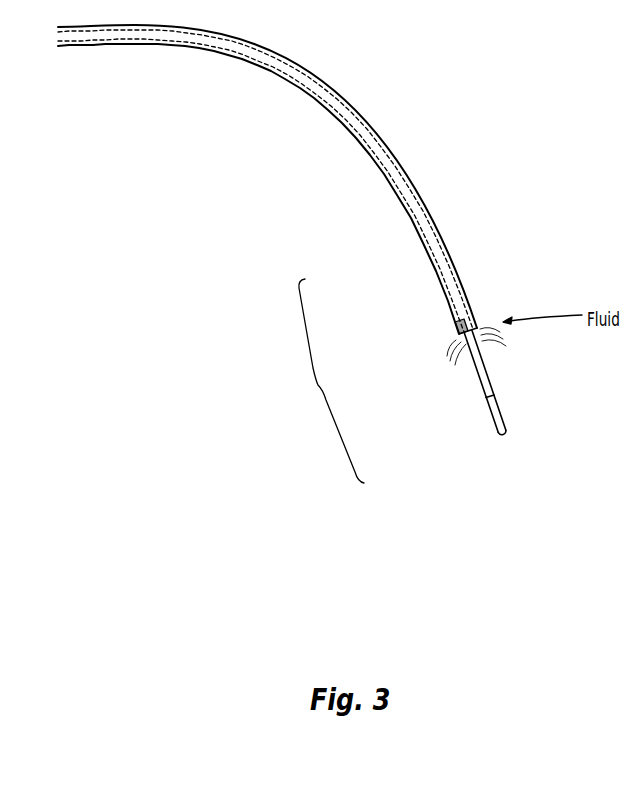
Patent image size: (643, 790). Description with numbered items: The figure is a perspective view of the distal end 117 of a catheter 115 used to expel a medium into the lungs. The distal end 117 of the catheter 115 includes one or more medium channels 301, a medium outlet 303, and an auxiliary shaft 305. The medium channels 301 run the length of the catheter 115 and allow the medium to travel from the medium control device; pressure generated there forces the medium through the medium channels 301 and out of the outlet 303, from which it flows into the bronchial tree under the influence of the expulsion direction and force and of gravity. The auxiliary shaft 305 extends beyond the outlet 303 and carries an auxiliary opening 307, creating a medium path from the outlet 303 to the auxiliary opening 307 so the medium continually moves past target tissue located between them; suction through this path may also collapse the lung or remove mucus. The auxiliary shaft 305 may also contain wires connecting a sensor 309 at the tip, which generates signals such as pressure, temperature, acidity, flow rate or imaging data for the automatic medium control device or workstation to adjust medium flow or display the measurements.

The catheter 115 is at (345, 100).
The medium channels 301 is at (413, 232).
The medium outlet 303 is at (456, 323).
The auxiliary shaft 305 is at (484, 378).
The auxiliary opening 307 is at (488, 398).
The sensor 309 is at (506, 420).
The distal end 117 is at (327, 381).